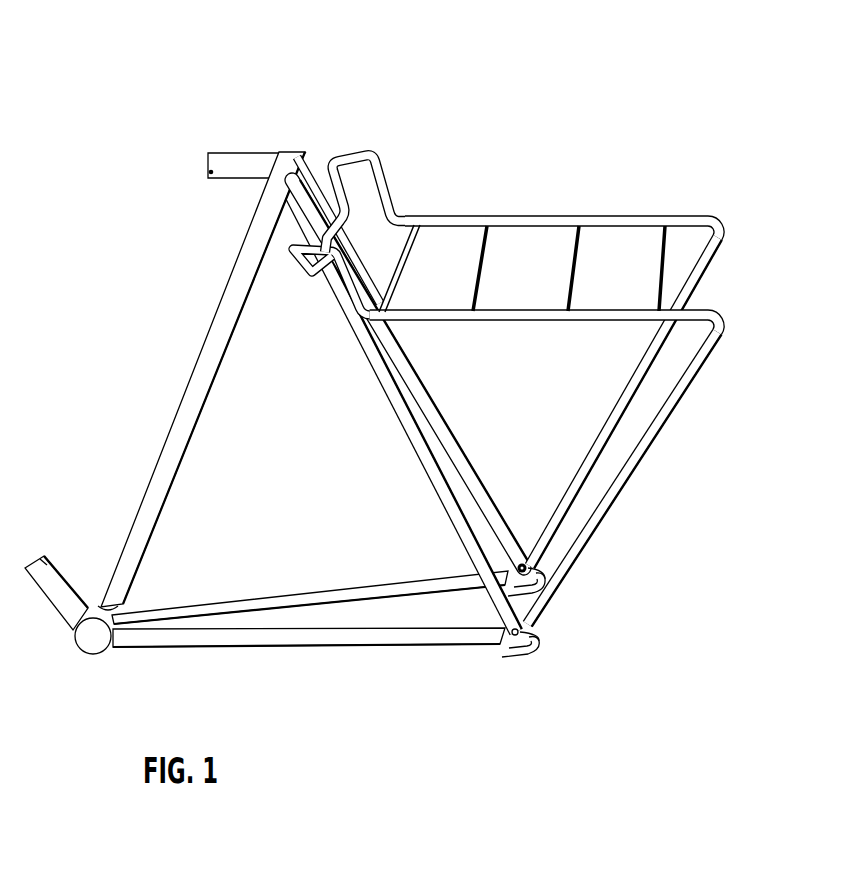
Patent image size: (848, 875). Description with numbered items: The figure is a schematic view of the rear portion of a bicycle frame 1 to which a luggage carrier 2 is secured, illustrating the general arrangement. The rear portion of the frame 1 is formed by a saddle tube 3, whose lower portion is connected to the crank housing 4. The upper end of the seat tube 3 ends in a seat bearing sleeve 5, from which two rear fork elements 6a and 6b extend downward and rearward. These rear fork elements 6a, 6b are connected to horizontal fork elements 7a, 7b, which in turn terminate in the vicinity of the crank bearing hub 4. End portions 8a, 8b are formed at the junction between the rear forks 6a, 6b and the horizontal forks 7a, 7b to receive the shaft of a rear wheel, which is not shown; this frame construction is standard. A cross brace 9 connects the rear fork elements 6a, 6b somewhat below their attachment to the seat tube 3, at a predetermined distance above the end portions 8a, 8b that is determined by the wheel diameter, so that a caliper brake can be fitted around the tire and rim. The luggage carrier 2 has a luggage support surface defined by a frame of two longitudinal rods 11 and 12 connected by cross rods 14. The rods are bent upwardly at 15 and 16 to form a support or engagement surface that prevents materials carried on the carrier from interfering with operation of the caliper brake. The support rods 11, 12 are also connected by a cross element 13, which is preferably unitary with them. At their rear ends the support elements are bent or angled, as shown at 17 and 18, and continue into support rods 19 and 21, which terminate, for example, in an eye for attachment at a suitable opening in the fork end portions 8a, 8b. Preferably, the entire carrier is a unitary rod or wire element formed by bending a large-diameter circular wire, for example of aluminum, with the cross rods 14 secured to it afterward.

The frame 1 is at (320, 357).
The luggage carrier 2 is at (513, 362).
The saddle tube 3 is at (192, 385).
The crank housing 4 is at (78, 648).
The seat bearing sleeve 5 is at (290, 152).
The rear fork element 6a is at (418, 443).
The rear fork element 6b is at (437, 410).
The horizontal fork element 7a is at (300, 648).
The horizontal fork element 7b is at (270, 598).
The end portion 8a is at (530, 641).
The end portion 8b is at (535, 575).
The cross brace 9 is at (316, 208).
The longitudinal rod 11 is at (605, 215).
The longitudinal rod 12 is at (540, 320).
The cross element 13 is at (327, 258).
The cross rod 14 is at (398, 282).
The upward bend 15 is at (353, 290).
The upward bend 16 is at (385, 185).
The rear bend 17 is at (714, 228).
The rear bend 18 is at (716, 327).
The support rod 19 is at (603, 423).
The support rod 21 is at (654, 440).